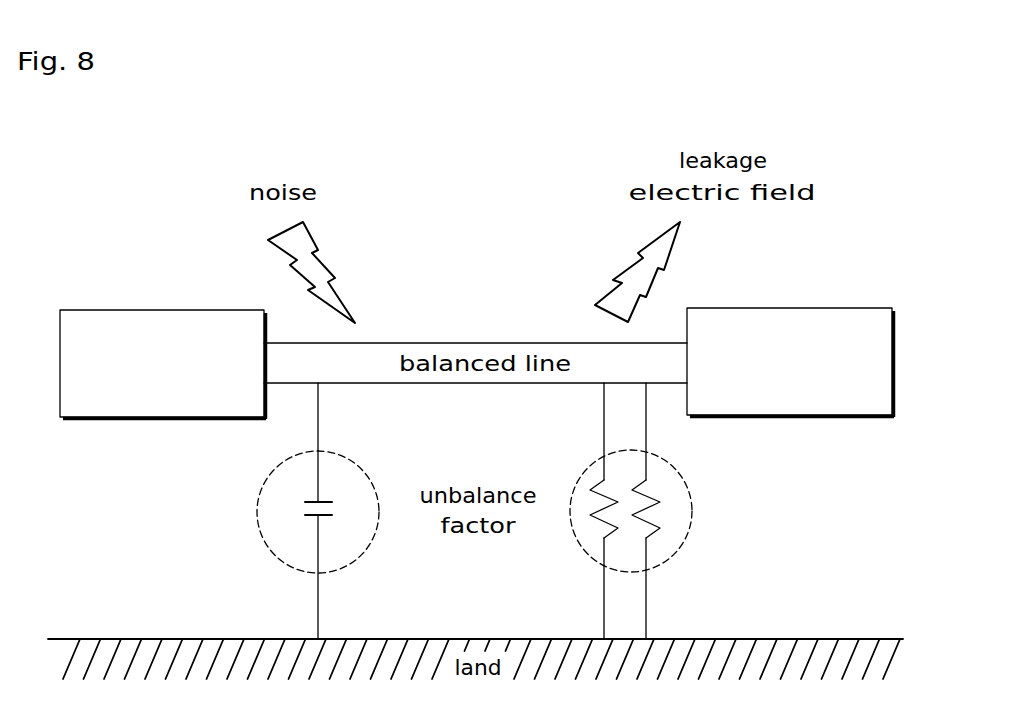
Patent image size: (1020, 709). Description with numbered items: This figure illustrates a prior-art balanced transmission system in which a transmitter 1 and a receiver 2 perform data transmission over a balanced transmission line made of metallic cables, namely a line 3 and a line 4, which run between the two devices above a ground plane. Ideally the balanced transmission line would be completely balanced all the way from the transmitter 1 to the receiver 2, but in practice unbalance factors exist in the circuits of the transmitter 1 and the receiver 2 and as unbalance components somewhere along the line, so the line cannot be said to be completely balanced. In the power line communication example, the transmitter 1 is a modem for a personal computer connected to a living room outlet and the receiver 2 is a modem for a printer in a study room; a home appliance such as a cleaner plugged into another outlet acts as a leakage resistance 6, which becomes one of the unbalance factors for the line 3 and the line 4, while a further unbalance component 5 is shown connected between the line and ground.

The transmitter 1 is at (100, 309).
The receiver 2 is at (865, 307).
The line 3 is at (375, 341).
The line 4 is at (372, 384).
The unbalance factor (capacitance to ground) 5 is at (360, 556).
The leakage resistance 6 is at (583, 548).